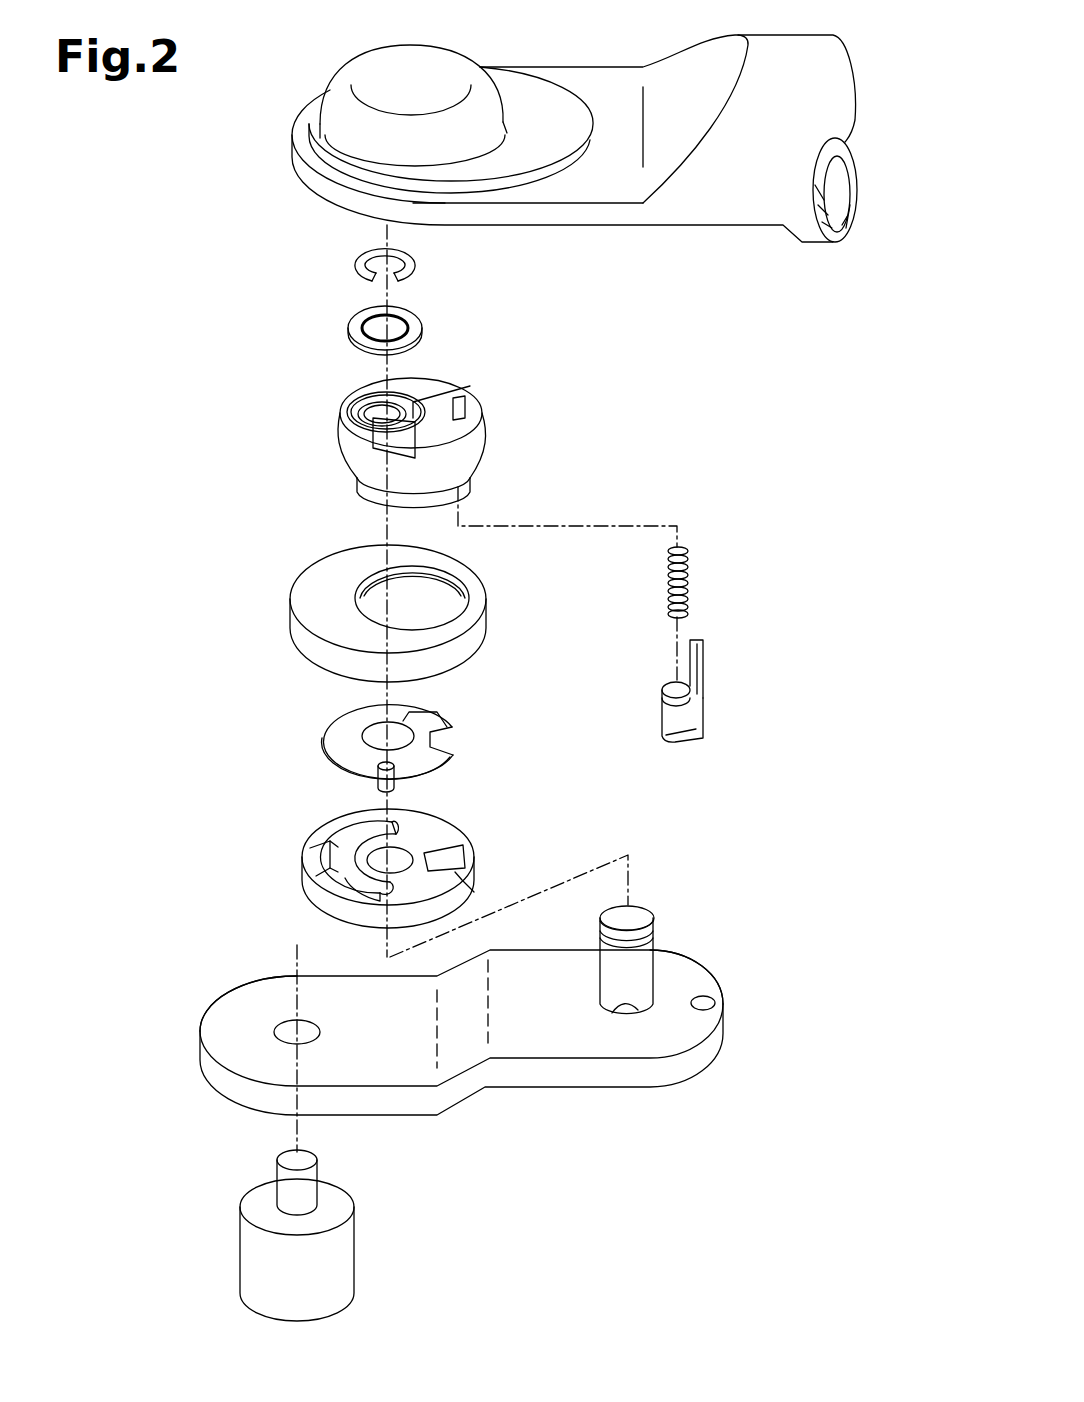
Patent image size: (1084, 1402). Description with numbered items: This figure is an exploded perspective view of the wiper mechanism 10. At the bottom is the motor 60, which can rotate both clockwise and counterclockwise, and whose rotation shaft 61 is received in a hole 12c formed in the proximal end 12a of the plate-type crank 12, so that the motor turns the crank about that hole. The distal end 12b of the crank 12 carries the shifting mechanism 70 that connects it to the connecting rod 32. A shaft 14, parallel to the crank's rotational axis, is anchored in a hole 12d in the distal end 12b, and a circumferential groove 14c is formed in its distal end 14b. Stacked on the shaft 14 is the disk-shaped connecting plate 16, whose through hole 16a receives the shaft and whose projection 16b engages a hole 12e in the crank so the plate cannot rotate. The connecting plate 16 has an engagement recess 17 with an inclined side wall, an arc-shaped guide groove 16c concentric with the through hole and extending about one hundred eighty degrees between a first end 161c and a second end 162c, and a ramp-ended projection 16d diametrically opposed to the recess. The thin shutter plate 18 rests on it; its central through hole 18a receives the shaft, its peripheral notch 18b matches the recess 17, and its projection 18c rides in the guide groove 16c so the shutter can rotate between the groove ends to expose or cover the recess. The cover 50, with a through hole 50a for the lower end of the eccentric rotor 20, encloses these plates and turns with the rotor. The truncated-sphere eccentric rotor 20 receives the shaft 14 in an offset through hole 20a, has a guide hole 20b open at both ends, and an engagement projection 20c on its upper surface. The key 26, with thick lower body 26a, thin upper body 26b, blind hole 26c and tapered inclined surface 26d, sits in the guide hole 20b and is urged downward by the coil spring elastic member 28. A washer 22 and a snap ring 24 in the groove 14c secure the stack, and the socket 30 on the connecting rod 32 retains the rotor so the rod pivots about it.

The wiper mechanism 10 is at (197, 181).
The plate-type crank 12 is at (463, 1047).
The proximal end of the crank 12a is at (244, 1055).
The distal end of the crank 12b is at (700, 1030).
The hole 12c is at (307, 1029).
The hole 12d is at (628, 1012).
The hole 12e is at (712, 996).
The shaft 14 is at (628, 933).
The distal end of the shaft 14b is at (638, 912).
The groove 14c is at (605, 958).
The connecting plate 16 is at (381, 877).
The through hole 16a is at (415, 850).
The projection 16b is at (478, 897).
The guide groove 16c is at (348, 840).
The projection 16d is at (305, 858).
The first end of the guide groove 161c is at (378, 893).
The second end of the guide groove 162c is at (410, 820).
The engagement recess 17 is at (470, 857).
The shutter plate 18 is at (394, 734).
The through hole 18a is at (435, 712).
The notch 18b is at (452, 735).
The projection 18c is at (375, 780).
The eccentric rotor 20 is at (417, 422).
The through hole 20a is at (347, 412).
The guide hole 20b is at (470, 395).
The engagement projection 20c is at (405, 400).
The washer 22 is at (424, 329).
The snap ring 24 is at (417, 259).
The key 26 is at (683, 720).
The lower body 26a is at (670, 716).
The upper body 26b is at (702, 668).
The blind hole 26c is at (666, 684).
The inclined surface 26d is at (682, 742).
The elastic member 28 is at (690, 578).
The socket 30 is at (438, 52).
The connecting rod 32 is at (720, 214).
The cover 50 is at (411, 598).
The through hole 50a is at (447, 607).
The motor 60 is at (345, 1259).
The rotation shaft 61 is at (318, 1174).
The shifting mechanism 70 is at (265, 569).